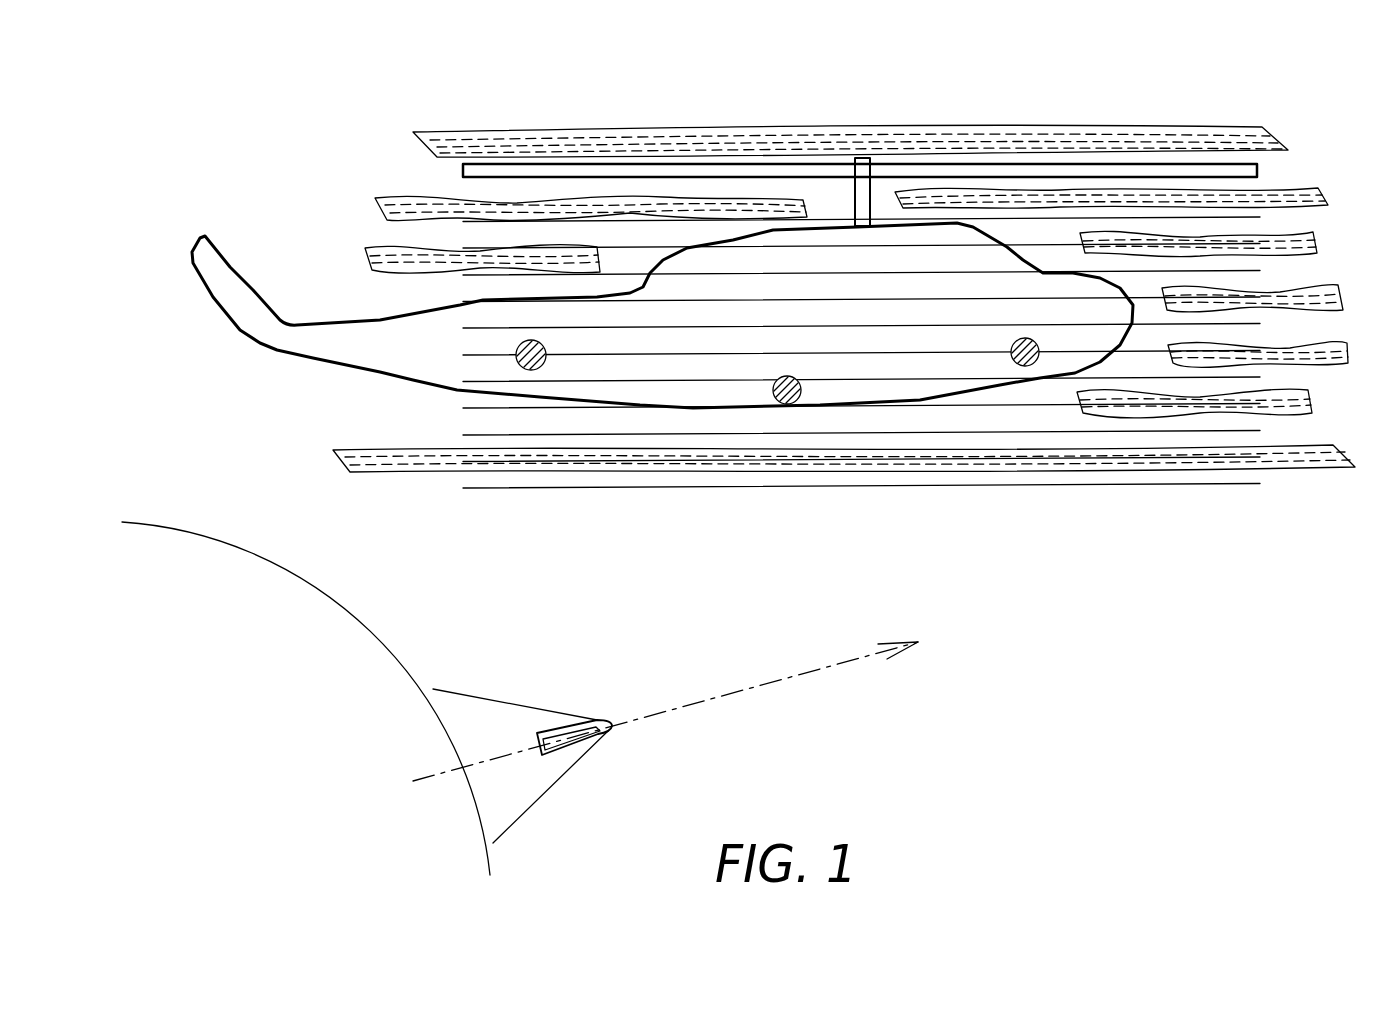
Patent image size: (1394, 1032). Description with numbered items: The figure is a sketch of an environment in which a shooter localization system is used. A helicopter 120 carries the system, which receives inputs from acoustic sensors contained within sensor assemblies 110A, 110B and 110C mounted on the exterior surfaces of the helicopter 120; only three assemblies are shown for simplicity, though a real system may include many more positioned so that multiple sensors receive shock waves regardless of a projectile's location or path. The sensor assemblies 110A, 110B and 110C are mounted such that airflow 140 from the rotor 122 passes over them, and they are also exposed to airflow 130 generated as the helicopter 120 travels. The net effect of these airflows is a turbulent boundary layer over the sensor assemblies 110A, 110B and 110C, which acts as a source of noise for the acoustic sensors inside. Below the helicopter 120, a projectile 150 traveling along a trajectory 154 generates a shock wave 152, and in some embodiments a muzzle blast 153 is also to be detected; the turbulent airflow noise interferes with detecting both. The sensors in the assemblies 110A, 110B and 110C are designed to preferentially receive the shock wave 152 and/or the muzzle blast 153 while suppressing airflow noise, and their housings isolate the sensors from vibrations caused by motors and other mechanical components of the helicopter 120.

The sensor assembly 110A is at (517, 362).
The sensor assembly 110B is at (798, 378).
The sensor assembly 110C is at (1014, 343).
The helicopter 120 is at (198, 244).
The rotor 122 is at (535, 164).
The airflow 130 is at (1240, 127).
The airflow 140 is at (840, 193).
The projectile 150 is at (543, 731).
The shock wave 152 is at (537, 800).
The muzzle blast 153 is at (318, 590).
The trajectory 154 is at (757, 685).